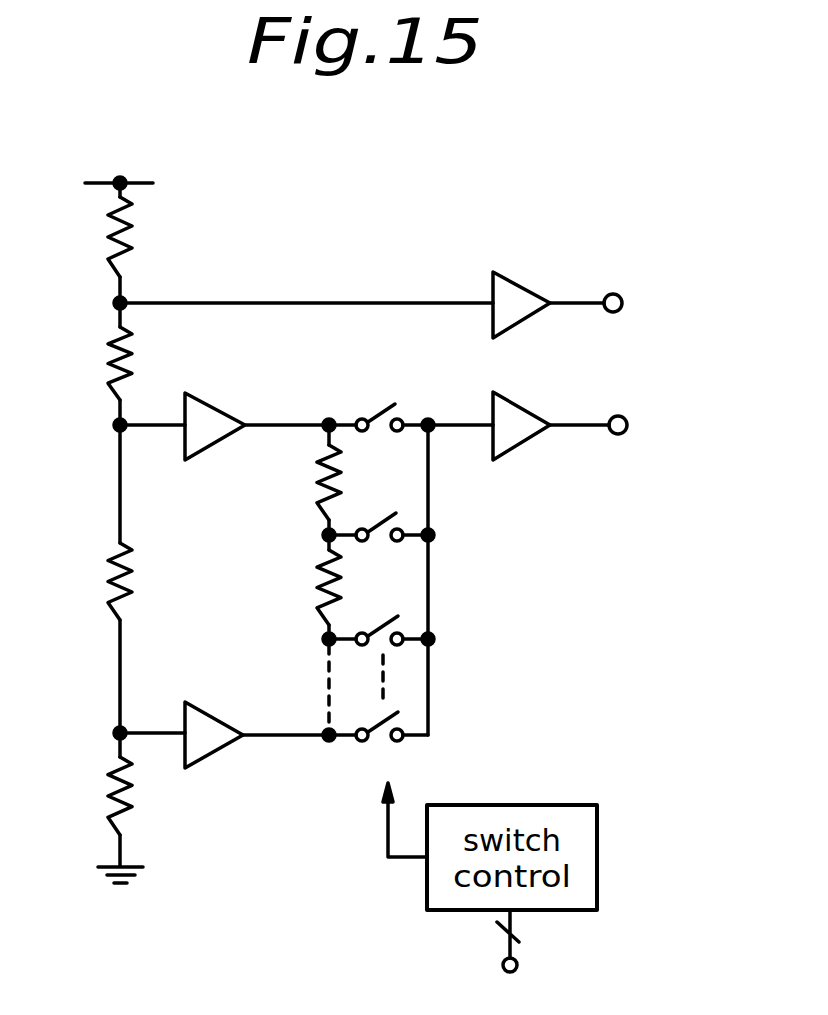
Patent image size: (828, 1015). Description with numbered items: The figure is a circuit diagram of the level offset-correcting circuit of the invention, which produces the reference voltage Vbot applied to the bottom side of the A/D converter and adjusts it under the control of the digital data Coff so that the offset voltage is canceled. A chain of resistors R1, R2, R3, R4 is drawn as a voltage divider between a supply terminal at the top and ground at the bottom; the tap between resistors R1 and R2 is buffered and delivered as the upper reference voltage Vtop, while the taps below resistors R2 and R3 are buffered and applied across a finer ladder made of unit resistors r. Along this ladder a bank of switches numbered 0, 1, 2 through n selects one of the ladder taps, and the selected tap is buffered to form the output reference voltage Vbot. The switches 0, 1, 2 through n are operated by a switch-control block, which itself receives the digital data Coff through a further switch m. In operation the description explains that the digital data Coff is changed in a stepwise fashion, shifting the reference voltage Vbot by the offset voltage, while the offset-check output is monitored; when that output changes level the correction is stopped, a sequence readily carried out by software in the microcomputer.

The resistor R1 is at (93, 237).
The resistor R2 is at (93, 363).
The resistor R3 is at (93, 581).
The resistor R4 is at (93, 796).
The unit resistor r is at (314, 532).
The switch 0 is at (378, 399).
The switch 1 is at (378, 507).
The switch 2 is at (378, 610).
The switch n is at (378, 750).
The switch m is at (525, 941).
The top reference voltage output Vtop is at (421, 305).
The reference voltage applied to the bottom side of the A/D converter Vbot is at (425, 426).
The digital data Coff is at (461, 961).